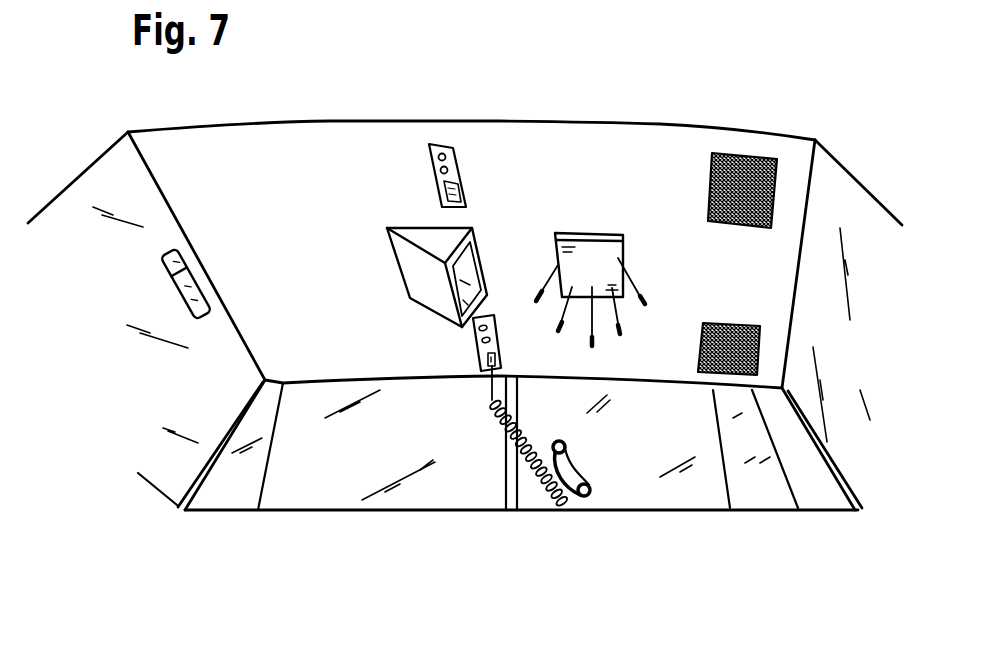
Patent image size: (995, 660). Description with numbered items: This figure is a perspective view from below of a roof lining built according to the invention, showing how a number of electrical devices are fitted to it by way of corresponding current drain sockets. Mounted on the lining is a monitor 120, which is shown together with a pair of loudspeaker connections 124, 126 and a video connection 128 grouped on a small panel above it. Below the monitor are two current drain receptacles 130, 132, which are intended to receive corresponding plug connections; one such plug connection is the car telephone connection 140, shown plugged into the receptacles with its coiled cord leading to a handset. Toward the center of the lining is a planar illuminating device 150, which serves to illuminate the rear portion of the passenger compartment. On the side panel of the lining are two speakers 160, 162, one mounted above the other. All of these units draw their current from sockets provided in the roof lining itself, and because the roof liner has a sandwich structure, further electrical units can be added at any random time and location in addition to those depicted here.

The monitor 120 is at (425, 262).
The loudspeaker connection 124 is at (440, 170).
The loudspeaker connection 126 is at (453, 148).
The video connection 128 is at (463, 188).
The current drain receptacle 130 is at (480, 330).
The current drain receptacle 132 is at (483, 342).
The car telephone connection 140 is at (503, 363).
The planar illuminating device 150 is at (586, 250).
The speaker 160 is at (741, 153).
The speaker 162 is at (721, 323).